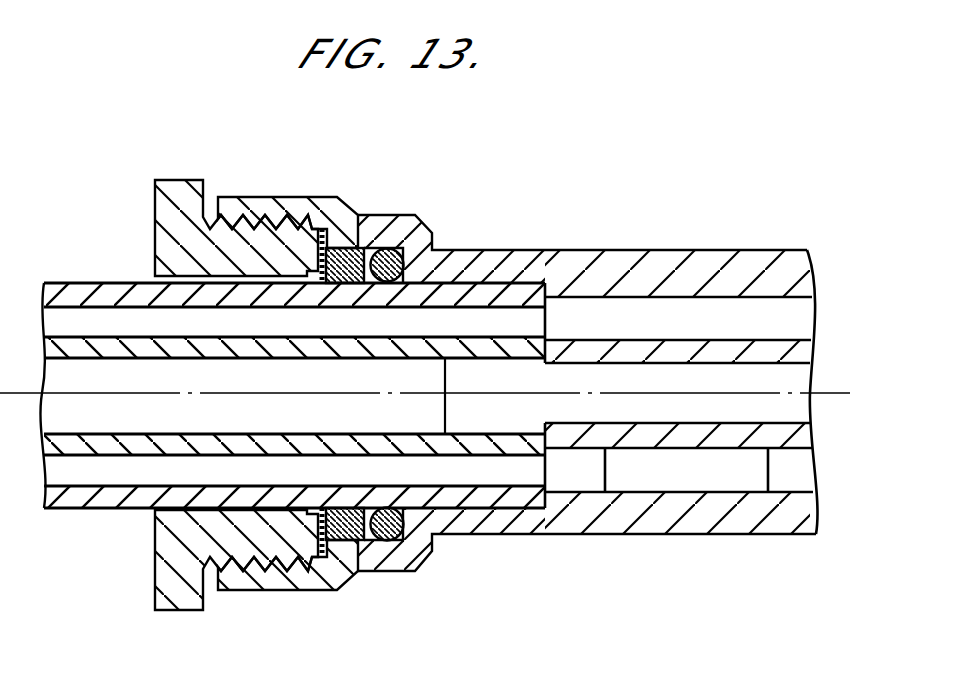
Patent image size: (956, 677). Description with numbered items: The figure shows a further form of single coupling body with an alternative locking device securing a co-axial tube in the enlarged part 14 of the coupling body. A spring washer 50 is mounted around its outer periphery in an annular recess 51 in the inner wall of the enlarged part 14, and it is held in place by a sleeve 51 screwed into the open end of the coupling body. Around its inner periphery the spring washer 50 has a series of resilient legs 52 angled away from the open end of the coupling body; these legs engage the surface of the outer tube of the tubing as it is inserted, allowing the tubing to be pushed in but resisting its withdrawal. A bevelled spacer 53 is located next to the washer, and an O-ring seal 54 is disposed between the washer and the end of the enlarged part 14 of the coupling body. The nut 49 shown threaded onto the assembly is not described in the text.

The enlarged end portion 14 is at (306, 198).
The nut 49 is at (183, 233).
The spring washer 50 is at (318, 252).
The sleeve 51 is at (332, 246).
The resilient legs 52 is at (353, 545).
The bevelled spacer 53 is at (364, 246).
The O-ring seal 54 is at (392, 542).